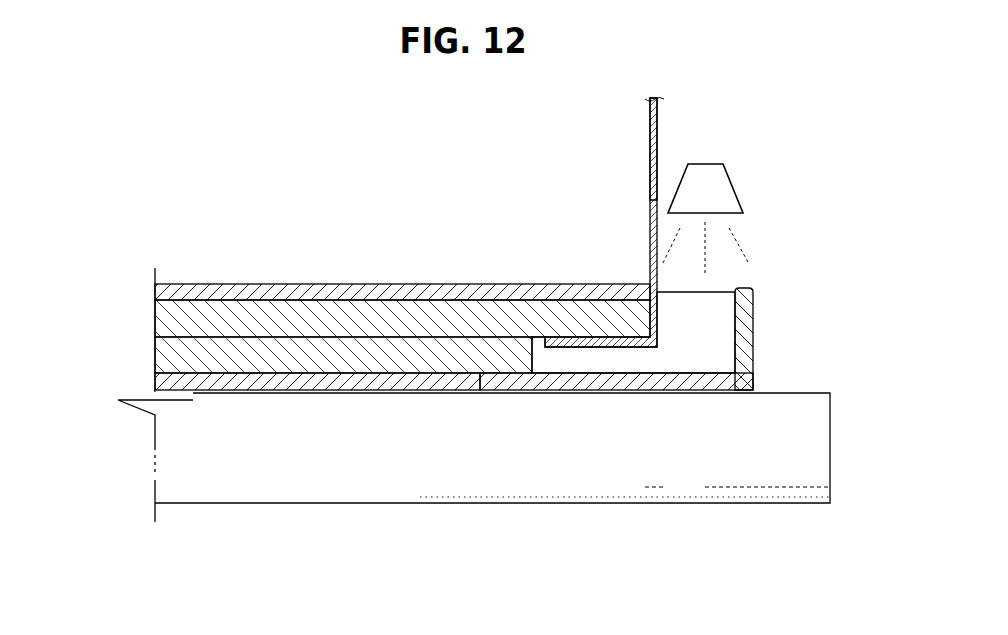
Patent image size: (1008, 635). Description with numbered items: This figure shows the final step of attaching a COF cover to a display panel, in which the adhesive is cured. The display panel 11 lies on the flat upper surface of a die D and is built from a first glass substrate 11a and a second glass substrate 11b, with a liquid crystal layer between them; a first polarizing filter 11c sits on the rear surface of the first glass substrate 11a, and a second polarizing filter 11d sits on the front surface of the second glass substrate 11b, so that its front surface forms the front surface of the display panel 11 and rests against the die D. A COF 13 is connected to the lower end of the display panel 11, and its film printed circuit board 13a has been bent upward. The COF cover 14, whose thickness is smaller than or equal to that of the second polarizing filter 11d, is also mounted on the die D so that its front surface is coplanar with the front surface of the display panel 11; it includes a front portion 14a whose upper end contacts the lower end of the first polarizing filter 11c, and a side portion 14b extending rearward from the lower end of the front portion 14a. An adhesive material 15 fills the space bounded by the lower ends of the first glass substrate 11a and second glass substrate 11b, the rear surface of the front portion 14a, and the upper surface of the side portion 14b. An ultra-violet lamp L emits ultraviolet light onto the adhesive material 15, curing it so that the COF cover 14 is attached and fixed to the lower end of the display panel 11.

The display panel 11 is at (352, 302).
The first glass substrate 11a is at (155, 322).
The second glass substrate 11b is at (155, 355).
The first polarizing filter 11c is at (155, 292).
The second polarizing filter 11d is at (194, 399).
The COF 13 is at (642, 223).
The film printed circuit board 13a is at (648, 160).
The COF cover 14 is at (674, 423).
The front portion 14a is at (667, 383).
The side portion 14b is at (753, 315).
The adhesive material 15 is at (713, 356).
The die D is at (575, 488).
The ultra-violet lamp L is at (727, 183).